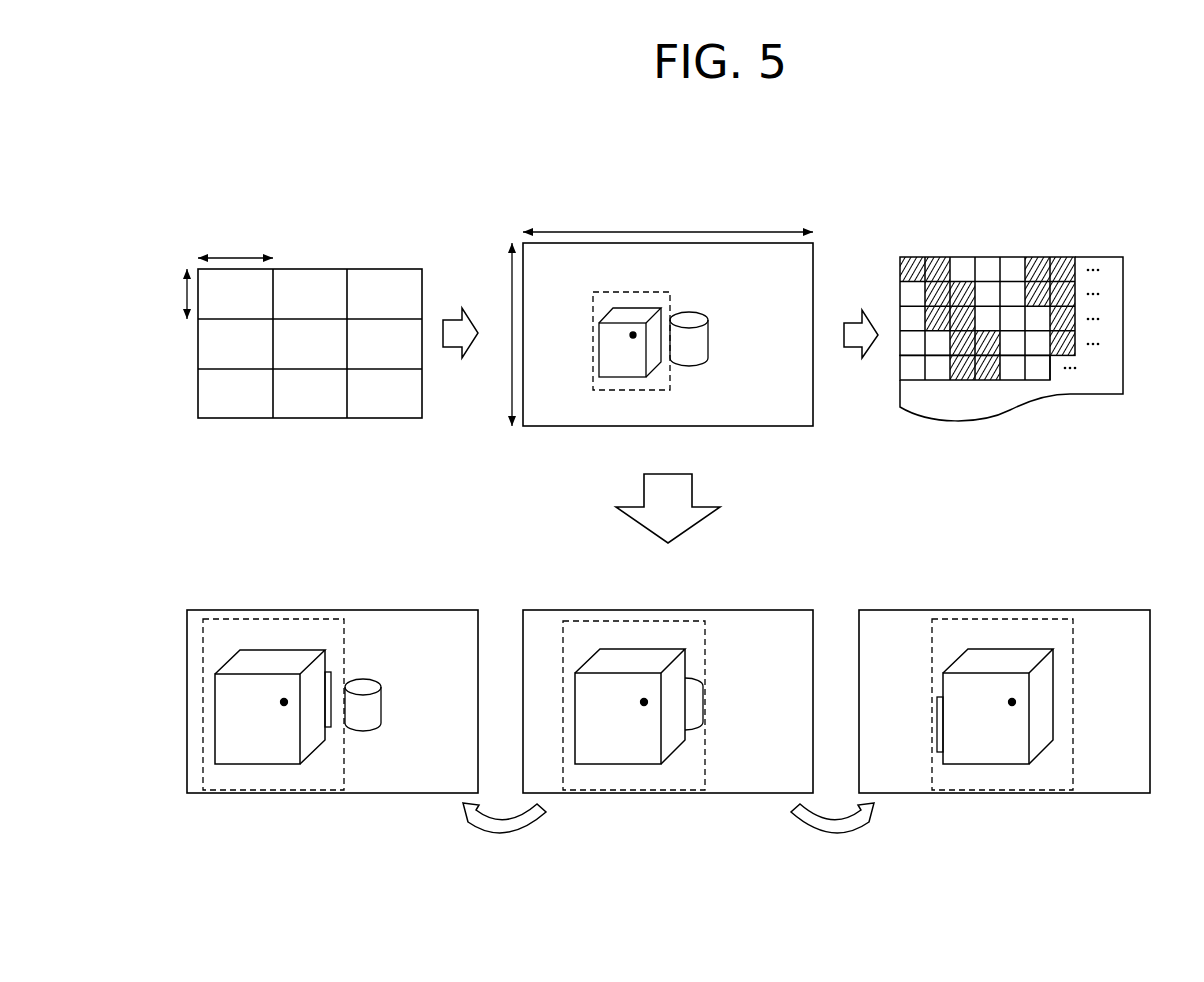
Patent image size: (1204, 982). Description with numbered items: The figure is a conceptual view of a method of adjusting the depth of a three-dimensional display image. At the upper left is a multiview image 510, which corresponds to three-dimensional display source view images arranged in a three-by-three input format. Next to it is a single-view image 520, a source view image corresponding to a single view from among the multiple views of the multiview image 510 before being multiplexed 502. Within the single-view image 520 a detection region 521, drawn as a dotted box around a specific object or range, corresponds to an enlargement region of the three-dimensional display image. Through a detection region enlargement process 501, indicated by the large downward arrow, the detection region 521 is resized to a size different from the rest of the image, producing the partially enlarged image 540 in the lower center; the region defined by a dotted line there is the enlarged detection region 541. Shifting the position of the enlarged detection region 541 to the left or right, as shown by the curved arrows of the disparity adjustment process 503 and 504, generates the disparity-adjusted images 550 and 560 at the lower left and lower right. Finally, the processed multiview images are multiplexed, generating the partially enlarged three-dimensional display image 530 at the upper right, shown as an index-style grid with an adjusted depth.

The detection region enlargement process 501 is at (644, 490).
The multiplexing 502 is at (850, 347).
The disparity adjustment process 503 is at (504, 833).
The disparity adjustment process 504 is at (832, 833).
The multiview image 510 is at (382, 418).
The single-view image 520 is at (788, 426).
The detection region 521 is at (660, 292).
The partially enlarged 3D display image 530 is at (1070, 394).
The partially enlarged image 540 is at (725, 793).
The enlarged detection region 541 is at (705, 642).
The disparity-adjusted image 550 is at (388, 793).
The disparity-adjusted image 560 is at (1060, 793).